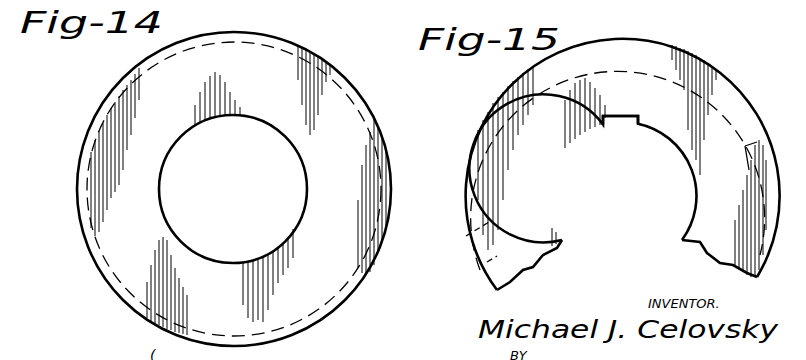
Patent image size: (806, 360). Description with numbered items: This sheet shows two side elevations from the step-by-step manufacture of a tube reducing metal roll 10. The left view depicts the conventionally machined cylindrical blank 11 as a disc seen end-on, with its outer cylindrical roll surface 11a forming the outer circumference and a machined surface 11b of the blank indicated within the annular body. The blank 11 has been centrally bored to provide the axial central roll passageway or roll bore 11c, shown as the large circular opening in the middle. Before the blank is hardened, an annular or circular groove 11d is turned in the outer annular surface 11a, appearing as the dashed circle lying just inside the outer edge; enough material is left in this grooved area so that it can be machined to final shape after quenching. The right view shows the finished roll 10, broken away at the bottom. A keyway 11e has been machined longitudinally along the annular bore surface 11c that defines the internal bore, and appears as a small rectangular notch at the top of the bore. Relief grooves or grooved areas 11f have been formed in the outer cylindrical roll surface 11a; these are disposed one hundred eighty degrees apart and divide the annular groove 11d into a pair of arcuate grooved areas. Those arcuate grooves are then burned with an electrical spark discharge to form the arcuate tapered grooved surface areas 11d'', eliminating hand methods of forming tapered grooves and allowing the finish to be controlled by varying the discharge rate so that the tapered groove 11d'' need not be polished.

In FIG. 15, the tube reducing metal roll 10 is at (545, 97).
In FIG. 14, the cylindrical blank 11 is at (305, 78).
In FIG. 15, the outer cylindrical roll surface 11a is at (490, 284).
In FIG. 14, the machined surface 11b is at (355, 177).
In FIG. 15, the machined surface 11b is at (533, 185).
In FIG. 14, the roll bore 11c is at (252, 262).
In FIG. 15, the roll bore 11c is at (553, 203).
In FIG. 14, the annular groove 11d is at (255, 189).
In FIG. 15, the annular groove 11d is at (618, 135).
In FIG. 15, the arcuate tapered grooved surface area 11d'' is at (726, 57).
In FIG. 15, the keyway 11e is at (605, 125).
In FIG. 15, the relief grooved area 11f is at (465, 237).